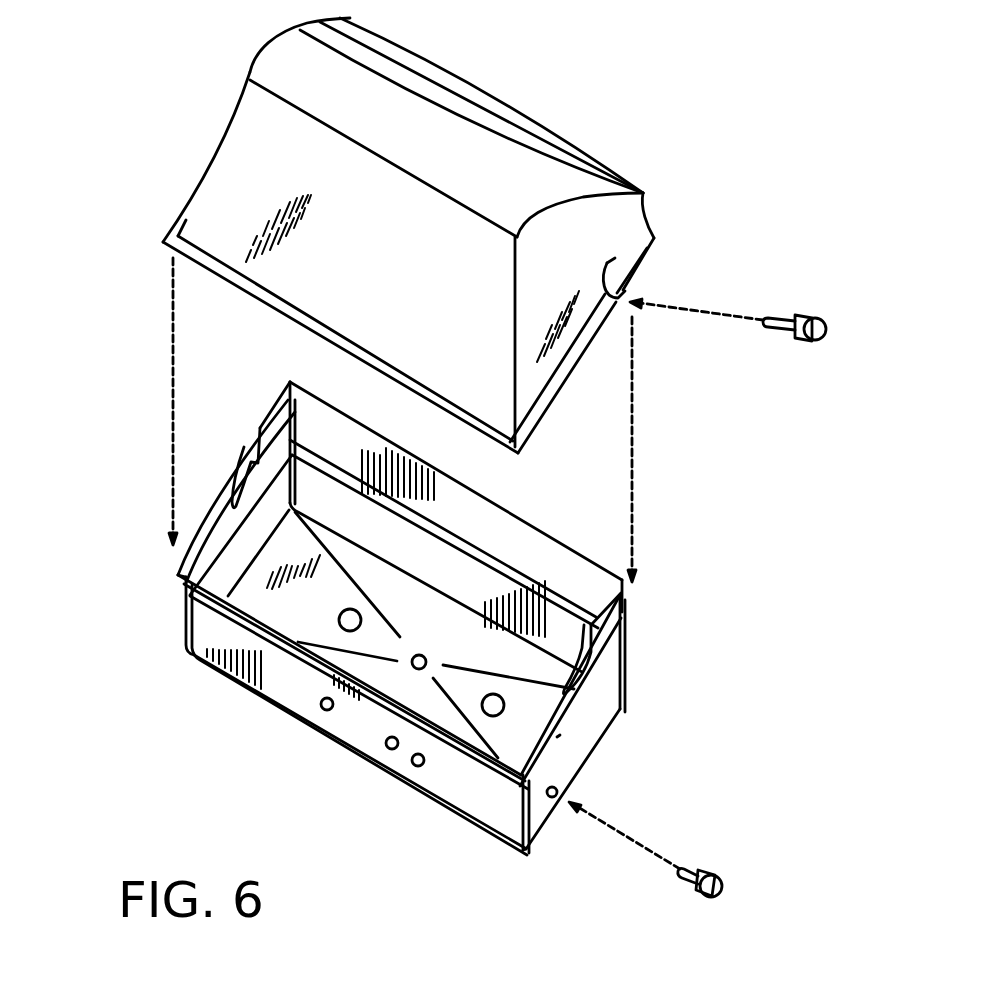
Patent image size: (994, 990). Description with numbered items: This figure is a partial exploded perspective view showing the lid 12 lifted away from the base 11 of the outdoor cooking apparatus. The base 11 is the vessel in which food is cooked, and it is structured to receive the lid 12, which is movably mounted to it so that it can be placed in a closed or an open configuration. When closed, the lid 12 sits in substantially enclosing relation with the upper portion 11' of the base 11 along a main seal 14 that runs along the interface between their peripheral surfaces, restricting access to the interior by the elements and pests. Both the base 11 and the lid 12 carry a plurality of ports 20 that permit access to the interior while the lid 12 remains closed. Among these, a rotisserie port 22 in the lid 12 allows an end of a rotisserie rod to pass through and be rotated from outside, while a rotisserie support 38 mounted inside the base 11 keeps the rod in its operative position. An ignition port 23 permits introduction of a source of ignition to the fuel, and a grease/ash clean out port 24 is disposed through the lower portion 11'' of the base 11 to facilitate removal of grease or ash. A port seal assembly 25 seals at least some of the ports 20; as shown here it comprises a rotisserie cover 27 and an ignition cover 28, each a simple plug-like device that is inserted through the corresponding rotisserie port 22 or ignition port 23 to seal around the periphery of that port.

The lid 12 is at (583, 147).
The rotisserie port 22 is at (617, 283).
The rotisserie cover 27 is at (778, 317).
The ignition cover 28 is at (680, 873).
The port seal assembly 25 is at (826, 360).
The base 11 is at (470, 618).
The upper portion of the base 11' is at (99, 558).
The lower portion of the base 11'' is at (502, 894).
The rotisserie support 38 is at (625, 600).
The main seal 14 is at (557, 737).
The grease/ash clean out port 24 is at (338, 620).
The ignition port 23 is at (563, 797).
The ports 20 is at (432, 632).